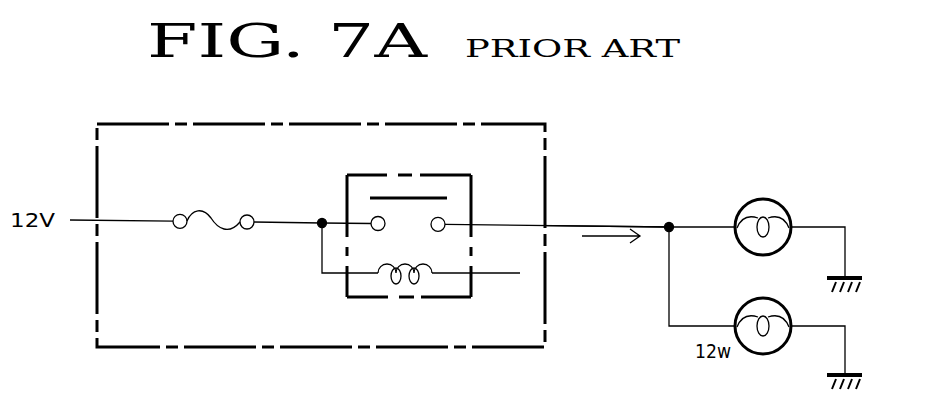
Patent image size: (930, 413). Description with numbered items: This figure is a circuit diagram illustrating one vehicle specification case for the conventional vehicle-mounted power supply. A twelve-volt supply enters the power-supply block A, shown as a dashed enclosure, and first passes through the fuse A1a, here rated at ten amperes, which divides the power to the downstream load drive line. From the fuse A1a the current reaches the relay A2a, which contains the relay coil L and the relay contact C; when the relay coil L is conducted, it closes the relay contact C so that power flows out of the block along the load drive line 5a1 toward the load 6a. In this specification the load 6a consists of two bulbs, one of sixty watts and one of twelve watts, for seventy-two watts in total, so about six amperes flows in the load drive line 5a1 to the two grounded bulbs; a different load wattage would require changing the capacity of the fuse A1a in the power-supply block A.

The power-supply block A is at (323, 125).
The fuse A1a is at (217, 211).
The relay A2a is at (403, 172).
The relay contact C is at (389, 188).
The relay coil L is at (406, 286).
The output wire harness 5a1 is at (580, 222).
The load 6a is at (788, 196).